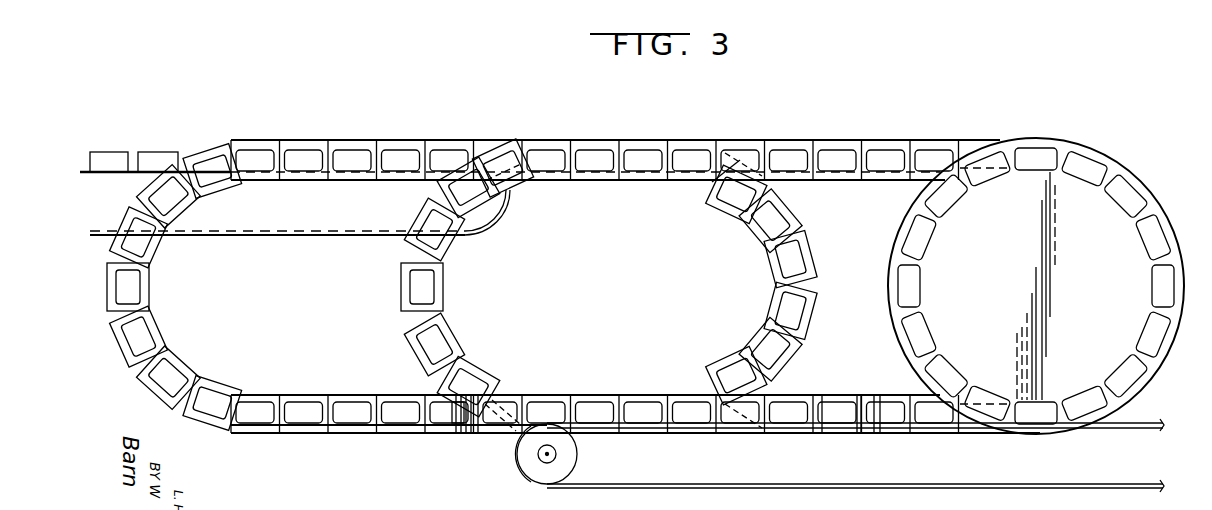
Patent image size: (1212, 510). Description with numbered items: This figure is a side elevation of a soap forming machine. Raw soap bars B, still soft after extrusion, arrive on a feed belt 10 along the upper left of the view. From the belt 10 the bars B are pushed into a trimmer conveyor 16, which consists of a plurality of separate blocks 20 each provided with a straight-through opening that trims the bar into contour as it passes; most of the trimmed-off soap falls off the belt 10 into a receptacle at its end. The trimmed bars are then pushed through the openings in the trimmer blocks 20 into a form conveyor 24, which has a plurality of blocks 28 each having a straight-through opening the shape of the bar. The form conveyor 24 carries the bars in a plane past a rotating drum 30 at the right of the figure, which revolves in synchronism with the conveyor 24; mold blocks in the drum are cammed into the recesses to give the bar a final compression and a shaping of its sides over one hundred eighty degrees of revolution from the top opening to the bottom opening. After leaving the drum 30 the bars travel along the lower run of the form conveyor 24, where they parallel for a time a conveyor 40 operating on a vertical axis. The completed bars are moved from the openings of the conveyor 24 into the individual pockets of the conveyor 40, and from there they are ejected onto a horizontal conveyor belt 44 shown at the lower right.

The soap bars B is at (112, 158).
The feed belt 10 is at (125, 174).
The trimmer conveyor 16 is at (145, 298).
The trimmer blocks 20 is at (135, 222).
The form conveyor 24 is at (445, 298).
The form blocks 28 is at (422, 227).
The rotating drum 30 is at (1083, 150).
The vertical-axis conveyor 40 is at (808, 395).
The horizontal conveyor belt 44 is at (1138, 428).